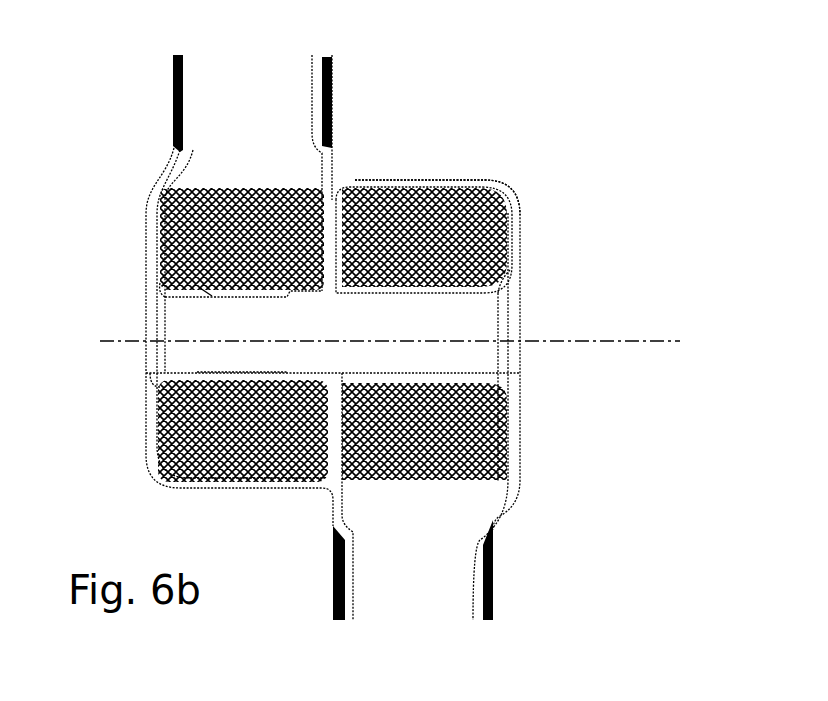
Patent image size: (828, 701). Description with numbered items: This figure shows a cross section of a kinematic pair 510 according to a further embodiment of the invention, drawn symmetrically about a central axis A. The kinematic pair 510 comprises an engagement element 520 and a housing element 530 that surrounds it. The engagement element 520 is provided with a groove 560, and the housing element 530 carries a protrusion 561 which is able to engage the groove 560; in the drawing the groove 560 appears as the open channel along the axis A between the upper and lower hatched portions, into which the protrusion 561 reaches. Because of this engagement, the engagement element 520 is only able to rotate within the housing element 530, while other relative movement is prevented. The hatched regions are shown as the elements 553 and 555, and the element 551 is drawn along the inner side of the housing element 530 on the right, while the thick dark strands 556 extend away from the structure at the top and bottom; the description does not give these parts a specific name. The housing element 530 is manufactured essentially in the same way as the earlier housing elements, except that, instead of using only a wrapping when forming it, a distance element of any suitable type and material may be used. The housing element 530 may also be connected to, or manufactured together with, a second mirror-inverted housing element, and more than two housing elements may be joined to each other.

The kinematic pair 510 is at (397, 102).
The engagement element 520 is at (503, 303).
The housing element 530 is at (490, 177).
The inner wall 551 is at (490, 288).
The first conductive block 553 is at (175, 218).
The second conductive block 555 is at (422, 184).
The conductor wire 556 is at (177, 110).
The groove 560 is at (212, 298).
The protrusion 561 is at (200, 290).
The longitudinal axis A is at (622, 340).